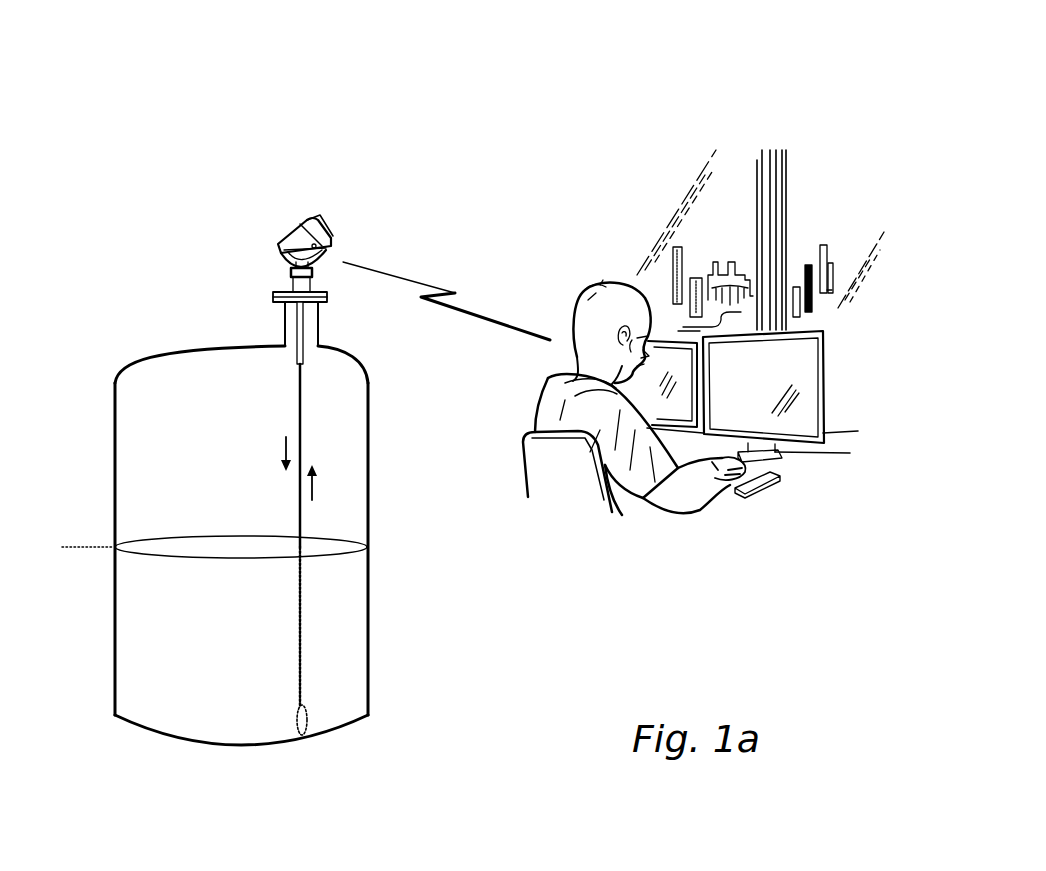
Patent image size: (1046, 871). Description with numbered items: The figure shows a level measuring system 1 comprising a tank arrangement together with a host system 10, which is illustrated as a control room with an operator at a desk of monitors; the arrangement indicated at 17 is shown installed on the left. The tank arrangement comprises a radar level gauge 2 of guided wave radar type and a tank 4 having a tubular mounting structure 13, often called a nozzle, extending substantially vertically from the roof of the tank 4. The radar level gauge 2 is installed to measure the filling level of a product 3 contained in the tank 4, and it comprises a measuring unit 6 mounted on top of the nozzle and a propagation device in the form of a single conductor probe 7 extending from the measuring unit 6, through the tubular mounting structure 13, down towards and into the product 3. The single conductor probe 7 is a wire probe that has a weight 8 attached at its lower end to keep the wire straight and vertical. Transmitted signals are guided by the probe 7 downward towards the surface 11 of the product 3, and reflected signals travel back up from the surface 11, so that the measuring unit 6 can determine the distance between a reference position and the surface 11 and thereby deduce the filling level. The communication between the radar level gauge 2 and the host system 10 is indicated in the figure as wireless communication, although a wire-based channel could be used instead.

The level measuring system 1 is at (543, 88).
The level gauging arrangement 17 is at (390, 143).
The radar level gauge 2 is at (247, 219).
The measuring unit 6 is at (296, 230).
The tubular mounting structure 13 is at (318, 322).
The single conductor probe 7 is at (303, 440).
The weight 8 is at (307, 722).
The tank 4 is at (114, 486).
The surface 11 is at (205, 545).
The product 3 is at (219, 659).
The host system 10 is at (828, 203).